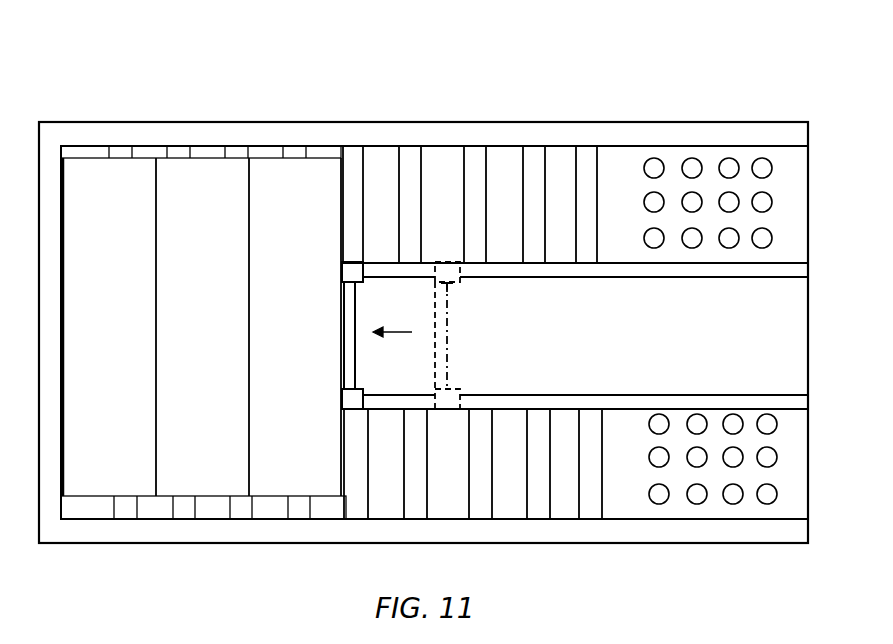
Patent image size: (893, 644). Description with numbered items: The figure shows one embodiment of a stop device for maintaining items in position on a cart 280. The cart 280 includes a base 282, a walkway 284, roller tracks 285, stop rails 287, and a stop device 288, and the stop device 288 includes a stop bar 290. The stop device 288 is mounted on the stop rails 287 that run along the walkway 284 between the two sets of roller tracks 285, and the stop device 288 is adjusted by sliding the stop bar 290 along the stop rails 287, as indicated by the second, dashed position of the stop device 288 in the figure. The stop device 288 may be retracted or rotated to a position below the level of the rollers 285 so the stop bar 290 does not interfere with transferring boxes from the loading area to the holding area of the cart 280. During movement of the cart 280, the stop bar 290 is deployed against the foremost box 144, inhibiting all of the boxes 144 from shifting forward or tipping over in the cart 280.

The cart 280 is at (158, 89).
The box 144 is at (313, 336).
The base 282 is at (620, 155).
The walkway 284 is at (787, 385).
The roller tracks 285 is at (444, 167).
The stop rails 287 is at (625, 272).
The stop device 288 is at (359, 312).
The stop bar 290 is at (352, 362).